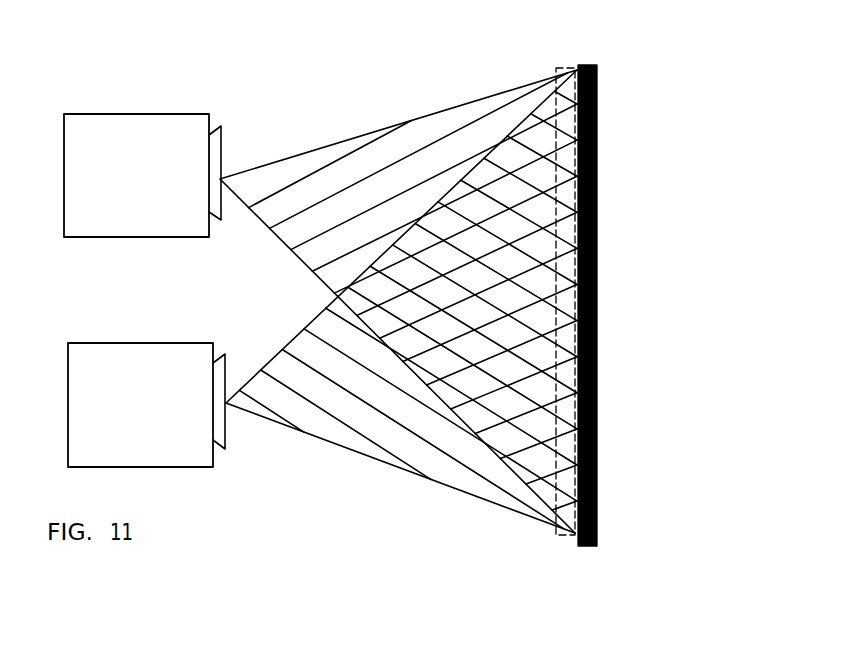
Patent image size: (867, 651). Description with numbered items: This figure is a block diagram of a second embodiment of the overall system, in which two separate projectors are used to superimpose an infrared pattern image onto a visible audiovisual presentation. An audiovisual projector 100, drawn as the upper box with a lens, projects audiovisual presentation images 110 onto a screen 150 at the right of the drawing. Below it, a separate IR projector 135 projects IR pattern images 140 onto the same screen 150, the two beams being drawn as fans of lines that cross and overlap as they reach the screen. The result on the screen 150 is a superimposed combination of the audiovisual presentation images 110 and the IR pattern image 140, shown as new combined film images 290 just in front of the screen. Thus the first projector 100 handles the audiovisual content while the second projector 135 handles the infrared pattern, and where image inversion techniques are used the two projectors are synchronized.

The audiovisual projector 100 is at (64, 200).
The audiovisual presentation images 110 is at (507, 90).
The IR projector 135 is at (68, 429).
The IR pattern images 140 is at (491, 508).
The screen 150 is at (584, 65).
The new combined film images 290 is at (567, 537).